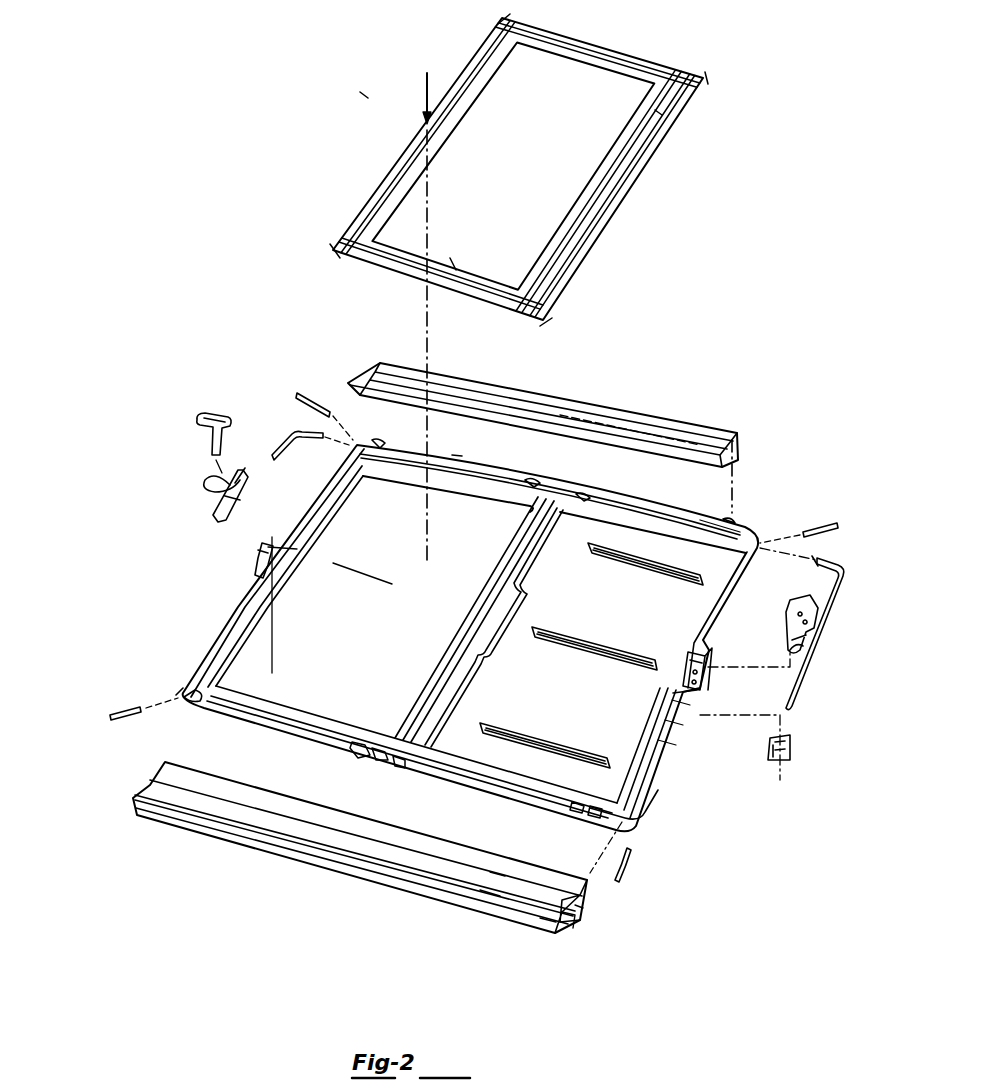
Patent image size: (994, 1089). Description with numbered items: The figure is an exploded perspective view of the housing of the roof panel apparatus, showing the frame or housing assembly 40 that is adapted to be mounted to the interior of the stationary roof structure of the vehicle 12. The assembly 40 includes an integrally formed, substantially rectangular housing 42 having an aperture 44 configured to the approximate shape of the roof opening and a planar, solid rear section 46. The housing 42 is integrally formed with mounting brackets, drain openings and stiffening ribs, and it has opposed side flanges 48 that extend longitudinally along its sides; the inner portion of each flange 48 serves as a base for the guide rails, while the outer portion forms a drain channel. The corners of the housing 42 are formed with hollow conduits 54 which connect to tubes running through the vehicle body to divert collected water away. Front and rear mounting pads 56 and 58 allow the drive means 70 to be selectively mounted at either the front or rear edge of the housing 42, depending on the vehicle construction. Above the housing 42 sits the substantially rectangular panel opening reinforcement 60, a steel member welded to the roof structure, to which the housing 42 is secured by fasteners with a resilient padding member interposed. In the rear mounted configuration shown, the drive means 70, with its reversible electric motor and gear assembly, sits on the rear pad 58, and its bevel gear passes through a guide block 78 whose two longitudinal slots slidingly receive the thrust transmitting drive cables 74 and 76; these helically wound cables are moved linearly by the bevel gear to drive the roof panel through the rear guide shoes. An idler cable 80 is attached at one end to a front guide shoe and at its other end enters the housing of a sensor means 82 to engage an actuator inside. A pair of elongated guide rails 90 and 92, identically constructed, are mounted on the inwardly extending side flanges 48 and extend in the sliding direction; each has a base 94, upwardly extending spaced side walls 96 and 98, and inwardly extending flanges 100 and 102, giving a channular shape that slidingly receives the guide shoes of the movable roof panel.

The vehicle 12 is at (790, 606).
The frame or housing assembly 40 is at (660, 826).
The housing 42 is at (608, 523).
The aperture 44 is at (303, 603).
The rear section 46 is at (667, 527).
The side flanges 48 is at (277, 700).
The hollow conduits 54 is at (300, 392).
The front mounting pad 56 is at (260, 563).
The rear mounting pad 58 is at (710, 680).
The panel opening reinforcement 60 is at (600, 212).
The drive means 70 is at (870, 625).
The drive cable 74 is at (660, 763).
The drive cable 76 is at (650, 797).
The guide block 78 is at (790, 750).
The idler cable 80 is at (296, 420).
The sensor means 82 is at (208, 507).
The guide rail 90 is at (618, 388).
The guide rail 92 is at (276, 878).
The base 94 is at (567, 933).
The side wall 96 is at (528, 917).
The side wall 98 is at (575, 910).
The inwardly extending flange 100 is at (492, 892).
The inwardly extending flange 102 is at (498, 877).